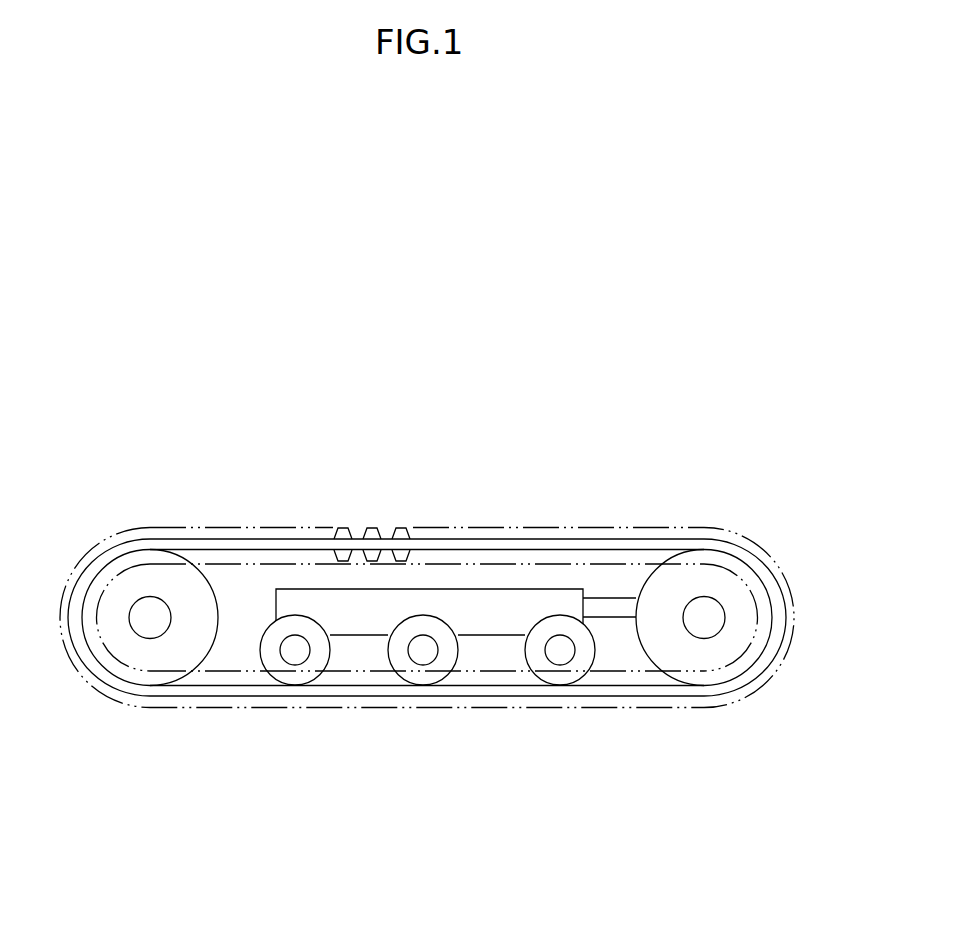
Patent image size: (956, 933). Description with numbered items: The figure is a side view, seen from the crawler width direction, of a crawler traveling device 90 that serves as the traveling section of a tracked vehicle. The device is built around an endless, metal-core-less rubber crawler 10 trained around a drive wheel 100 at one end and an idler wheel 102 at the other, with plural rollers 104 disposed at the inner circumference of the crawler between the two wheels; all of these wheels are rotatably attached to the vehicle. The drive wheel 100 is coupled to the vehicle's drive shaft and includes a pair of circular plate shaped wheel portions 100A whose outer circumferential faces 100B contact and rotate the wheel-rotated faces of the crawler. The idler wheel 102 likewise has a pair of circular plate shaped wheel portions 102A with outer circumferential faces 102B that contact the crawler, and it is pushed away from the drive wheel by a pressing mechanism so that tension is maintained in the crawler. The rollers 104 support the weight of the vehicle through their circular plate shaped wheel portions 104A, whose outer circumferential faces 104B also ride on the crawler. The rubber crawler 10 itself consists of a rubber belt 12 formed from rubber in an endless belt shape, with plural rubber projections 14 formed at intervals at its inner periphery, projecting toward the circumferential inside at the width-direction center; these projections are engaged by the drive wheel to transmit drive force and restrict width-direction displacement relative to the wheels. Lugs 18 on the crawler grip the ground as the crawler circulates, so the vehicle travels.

The crawler traveling device 90 is at (664, 355).
The rubber crawler 10 is at (587, 527).
The rubber belt 12 is at (521, 538).
The rubber projection 14 is at (405, 557).
The lug 18 is at (372, 527).
The drive wheel 100 is at (218, 593).
The wheel portion 100A is at (128, 562).
The outer circumferential face 100B is at (213, 575).
The idler wheel 102 is at (638, 585).
The wheel portion 102A is at (713, 557).
The outer circumferential face 102B is at (668, 563).
The roller 104 is at (296, 686).
The wheel portion 104A is at (531, 653).
The outer circumferential face 104B is at (590, 653).